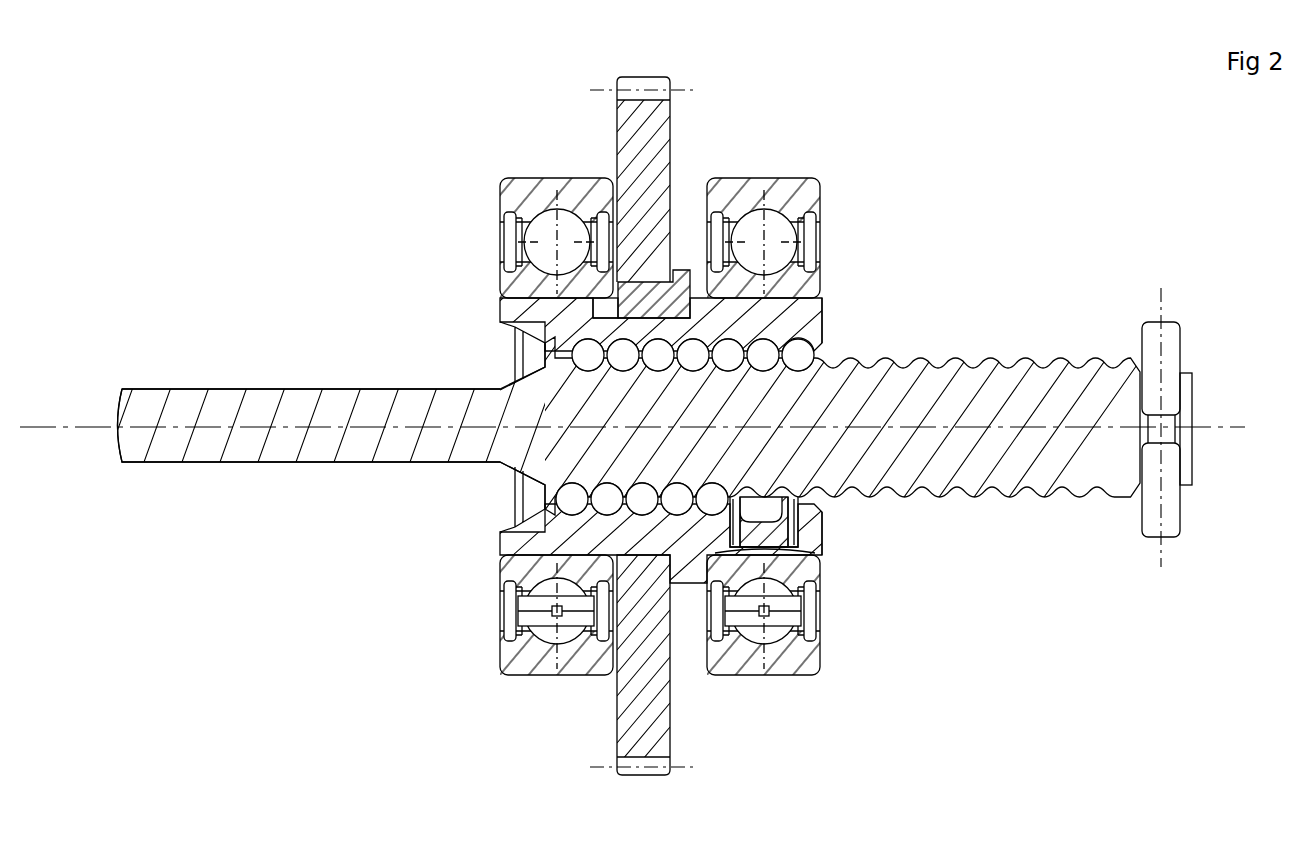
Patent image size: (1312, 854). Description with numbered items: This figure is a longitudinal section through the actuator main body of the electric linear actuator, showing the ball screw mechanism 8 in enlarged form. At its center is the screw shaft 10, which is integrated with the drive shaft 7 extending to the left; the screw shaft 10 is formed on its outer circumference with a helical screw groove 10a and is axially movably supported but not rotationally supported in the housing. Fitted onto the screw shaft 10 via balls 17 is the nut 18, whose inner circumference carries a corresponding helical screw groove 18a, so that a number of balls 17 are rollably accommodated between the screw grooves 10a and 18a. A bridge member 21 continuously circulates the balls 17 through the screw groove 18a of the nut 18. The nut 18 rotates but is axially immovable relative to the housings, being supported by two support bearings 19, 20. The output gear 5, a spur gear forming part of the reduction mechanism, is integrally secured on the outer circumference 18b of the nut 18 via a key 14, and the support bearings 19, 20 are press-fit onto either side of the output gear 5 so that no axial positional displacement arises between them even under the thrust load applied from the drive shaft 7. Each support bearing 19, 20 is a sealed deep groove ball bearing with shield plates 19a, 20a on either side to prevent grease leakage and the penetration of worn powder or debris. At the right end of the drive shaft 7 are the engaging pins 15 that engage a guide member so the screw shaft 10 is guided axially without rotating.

The output gear 5 is at (613, 118).
The drive shaft 7 is at (385, 400).
The ball screw mechanism 8 is at (854, 262).
The screw shaft 10 is at (1037, 319).
The helical screw groove 10a is at (935, 358).
The key 14 is at (680, 284).
The engaging pin 15 is at (1165, 335).
The balls 17 is at (767, 358).
The nut 18 is at (500, 312).
The helical screw groove 18a is at (843, 358).
The outer circumference 18b is at (500, 568).
The support bearing 19 is at (531, 195).
The shield plate 19a is at (498, 232).
The support bearing 20 is at (784, 193).
The shield plate 20a is at (820, 600).
The bridge member 21 is at (790, 517).